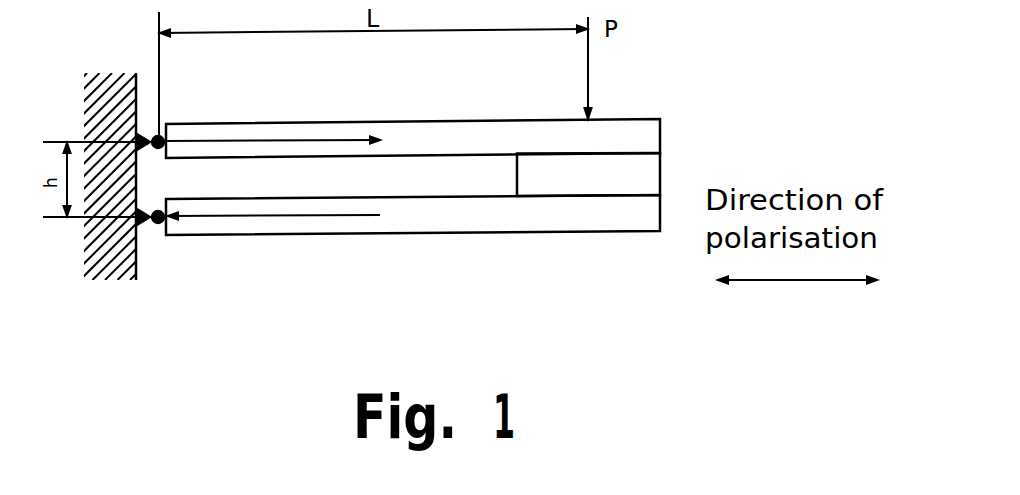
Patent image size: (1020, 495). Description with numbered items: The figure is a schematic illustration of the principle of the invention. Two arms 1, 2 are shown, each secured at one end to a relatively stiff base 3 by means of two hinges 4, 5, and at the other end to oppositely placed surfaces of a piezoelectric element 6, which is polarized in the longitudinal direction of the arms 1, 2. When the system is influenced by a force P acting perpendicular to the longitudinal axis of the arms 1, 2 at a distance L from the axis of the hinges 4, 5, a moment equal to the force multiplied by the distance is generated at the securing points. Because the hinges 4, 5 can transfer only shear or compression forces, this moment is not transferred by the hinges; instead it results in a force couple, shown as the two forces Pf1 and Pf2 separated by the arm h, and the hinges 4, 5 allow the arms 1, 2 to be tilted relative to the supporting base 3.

The arm 1 is at (614, 125).
The arm 2 is at (563, 222).
The base 3 is at (100, 250).
The hinge 4 is at (147, 118).
The hinge 5 is at (148, 237).
The piezoelectric element 6 is at (620, 178).